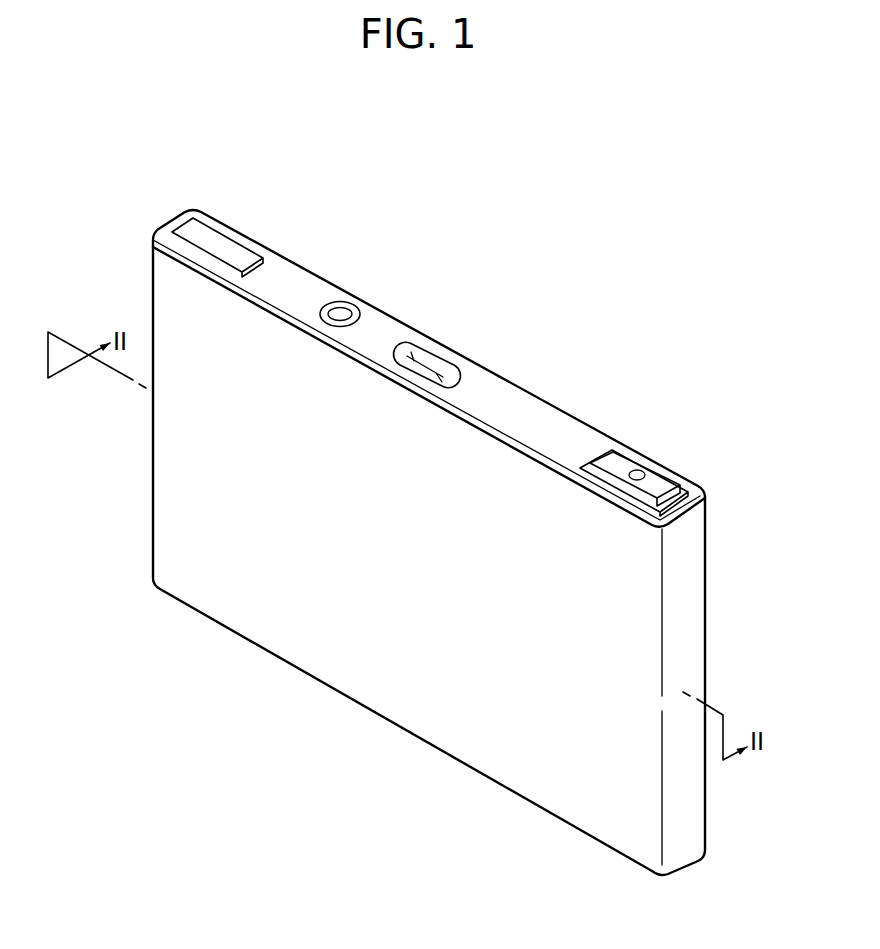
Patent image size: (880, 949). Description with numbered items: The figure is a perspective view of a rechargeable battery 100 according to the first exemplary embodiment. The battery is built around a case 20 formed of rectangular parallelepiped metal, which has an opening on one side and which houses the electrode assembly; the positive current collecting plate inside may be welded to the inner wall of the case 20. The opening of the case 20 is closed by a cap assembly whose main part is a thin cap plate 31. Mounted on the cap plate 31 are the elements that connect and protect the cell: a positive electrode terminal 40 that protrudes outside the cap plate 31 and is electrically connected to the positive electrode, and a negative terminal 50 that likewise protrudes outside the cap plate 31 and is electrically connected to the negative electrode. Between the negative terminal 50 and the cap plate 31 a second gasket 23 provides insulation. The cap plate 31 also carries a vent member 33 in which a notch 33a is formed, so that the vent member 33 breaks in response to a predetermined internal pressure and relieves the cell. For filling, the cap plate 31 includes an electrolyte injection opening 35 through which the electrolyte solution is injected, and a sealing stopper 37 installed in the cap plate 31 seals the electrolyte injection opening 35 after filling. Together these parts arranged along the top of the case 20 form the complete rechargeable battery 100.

The rechargeable battery 100 is at (543, 231).
The case 20 is at (390, 688).
The cap plate 31 is at (532, 412).
The positive electrode terminal 40 is at (222, 240).
The sealing stopper 37 is at (345, 312).
The vent member 33 is at (443, 368).
The notch 33a is at (422, 358).
The second gasket 23 is at (688, 495).
The negative terminal 50 is at (615, 458).
The electrolyte injection opening 35 is at (640, 476).